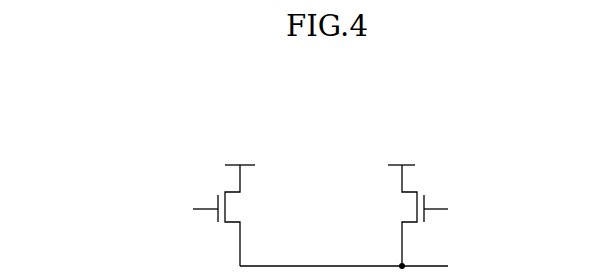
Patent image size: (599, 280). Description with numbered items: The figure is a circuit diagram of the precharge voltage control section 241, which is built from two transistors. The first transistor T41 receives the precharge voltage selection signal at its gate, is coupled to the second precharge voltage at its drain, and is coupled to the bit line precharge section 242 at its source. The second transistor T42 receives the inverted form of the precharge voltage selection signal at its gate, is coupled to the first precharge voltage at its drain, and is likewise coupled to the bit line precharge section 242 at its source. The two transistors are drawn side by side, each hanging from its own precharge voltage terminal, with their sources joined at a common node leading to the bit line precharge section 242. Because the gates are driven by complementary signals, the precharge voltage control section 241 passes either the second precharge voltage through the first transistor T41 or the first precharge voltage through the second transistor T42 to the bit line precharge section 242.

The precharge voltage control section 241 is at (88, 164).
The bit line precharge section 242 is at (363, 268).
The first transistor T41 is at (437, 203).
The second transistor T42 is at (195, 203).